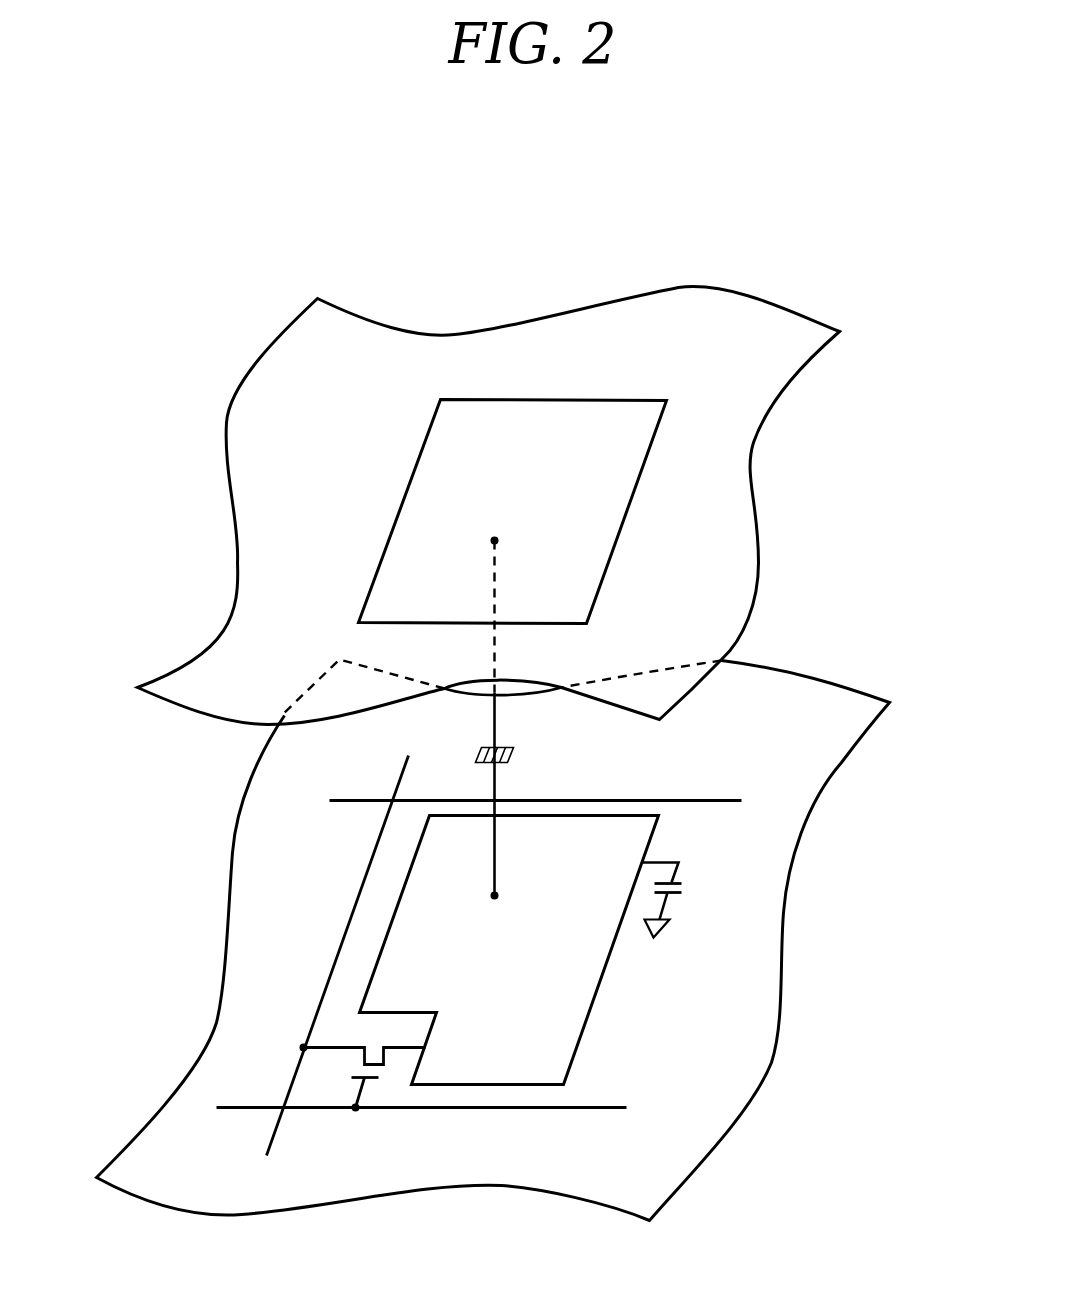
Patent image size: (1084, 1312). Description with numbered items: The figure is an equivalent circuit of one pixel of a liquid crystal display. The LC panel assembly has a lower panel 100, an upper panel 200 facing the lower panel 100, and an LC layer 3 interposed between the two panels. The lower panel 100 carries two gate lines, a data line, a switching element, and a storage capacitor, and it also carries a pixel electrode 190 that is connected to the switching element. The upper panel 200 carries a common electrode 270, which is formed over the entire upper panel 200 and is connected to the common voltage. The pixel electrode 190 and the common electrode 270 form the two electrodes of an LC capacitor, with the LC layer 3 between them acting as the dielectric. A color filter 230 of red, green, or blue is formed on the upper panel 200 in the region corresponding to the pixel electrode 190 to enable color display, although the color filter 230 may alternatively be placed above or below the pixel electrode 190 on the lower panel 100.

The LC layer 3 is at (122, 813).
The lower panel 100 is at (795, 912).
The pixel electrode 190 is at (588, 1007).
The upper panel 200 is at (772, 537).
The color filter 230 is at (622, 527).
The common electrode 270 is at (748, 470).